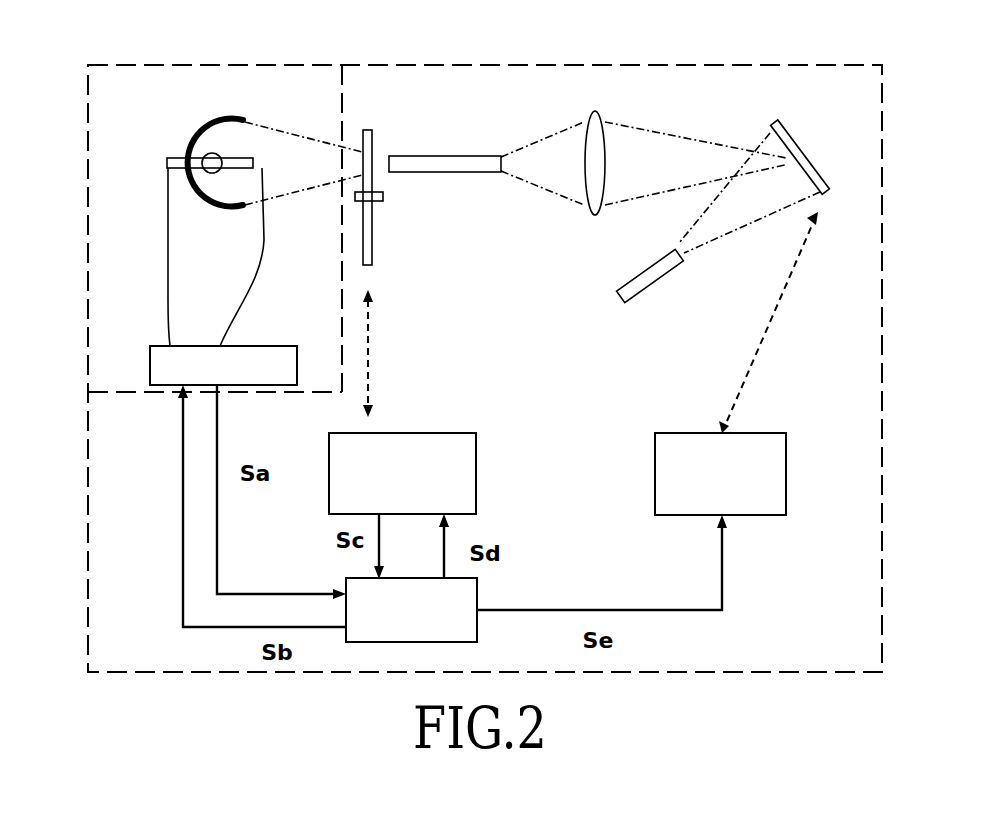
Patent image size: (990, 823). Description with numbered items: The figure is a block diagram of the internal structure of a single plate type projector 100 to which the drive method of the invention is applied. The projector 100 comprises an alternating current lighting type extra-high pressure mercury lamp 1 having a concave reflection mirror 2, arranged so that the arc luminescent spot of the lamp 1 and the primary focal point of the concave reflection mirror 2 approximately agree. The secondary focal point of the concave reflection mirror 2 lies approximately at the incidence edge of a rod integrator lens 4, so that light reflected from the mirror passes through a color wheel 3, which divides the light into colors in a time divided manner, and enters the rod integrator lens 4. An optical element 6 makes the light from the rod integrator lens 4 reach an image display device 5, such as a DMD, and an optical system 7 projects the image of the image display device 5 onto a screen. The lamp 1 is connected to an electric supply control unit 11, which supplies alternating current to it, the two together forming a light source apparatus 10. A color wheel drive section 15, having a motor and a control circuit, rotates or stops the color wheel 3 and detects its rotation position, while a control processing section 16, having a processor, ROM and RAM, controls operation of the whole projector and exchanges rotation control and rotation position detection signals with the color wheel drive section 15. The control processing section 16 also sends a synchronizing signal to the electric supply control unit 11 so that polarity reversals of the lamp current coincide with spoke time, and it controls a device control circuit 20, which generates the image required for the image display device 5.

The extra-high pressure mercury lamp 1 is at (214, 153).
The concave reflection mirror 2 is at (193, 130).
The color wheel 3 is at (371, 130).
The rod integrator lens 4 is at (462, 156).
The image display device 5 is at (797, 132).
The optical element 6 is at (593, 112).
The optical system 7 is at (668, 272).
The light source apparatus 10 is at (127, 268).
The electric supply control unit 11 is at (271, 355).
The color wheel drive section 15 is at (476, 450).
The control processing section 16 is at (477, 593).
The device control circuit 20 is at (786, 473).
The projector 100 is at (888, 178).